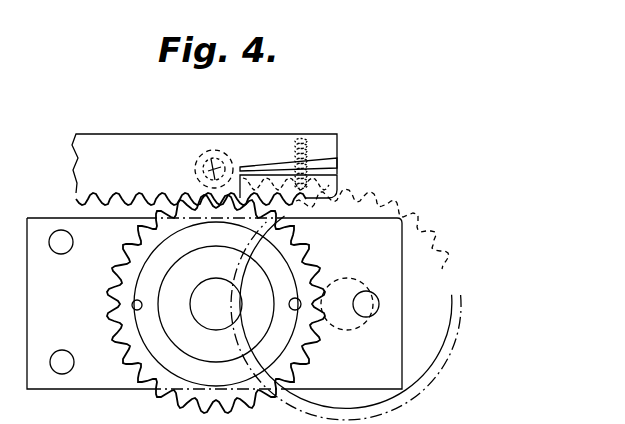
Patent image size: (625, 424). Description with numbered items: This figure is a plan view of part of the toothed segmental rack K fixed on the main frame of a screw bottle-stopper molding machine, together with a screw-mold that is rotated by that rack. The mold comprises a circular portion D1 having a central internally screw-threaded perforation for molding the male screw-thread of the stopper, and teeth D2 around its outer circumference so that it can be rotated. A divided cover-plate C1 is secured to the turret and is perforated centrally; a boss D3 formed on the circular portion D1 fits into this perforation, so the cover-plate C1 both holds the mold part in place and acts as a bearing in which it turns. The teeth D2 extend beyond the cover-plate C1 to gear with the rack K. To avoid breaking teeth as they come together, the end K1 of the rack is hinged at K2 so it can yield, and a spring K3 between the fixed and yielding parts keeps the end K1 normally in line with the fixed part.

The toothed segmental rack K is at (204, 169).
The yielding end of the rack K1 is at (337, 178).
The hinge K2 is at (223, 155).
The spring K3 is at (305, 166).
The cover-plate C1 is at (214, 303).
The circular portion of the mold D1 is at (216, 304).
The teeth D2 is at (142, 226).
The boss D3 is at (201, 304).